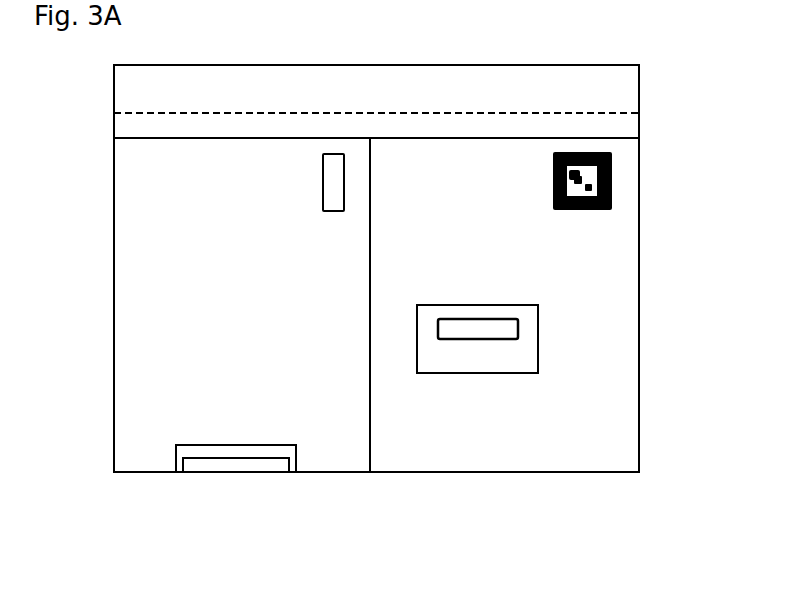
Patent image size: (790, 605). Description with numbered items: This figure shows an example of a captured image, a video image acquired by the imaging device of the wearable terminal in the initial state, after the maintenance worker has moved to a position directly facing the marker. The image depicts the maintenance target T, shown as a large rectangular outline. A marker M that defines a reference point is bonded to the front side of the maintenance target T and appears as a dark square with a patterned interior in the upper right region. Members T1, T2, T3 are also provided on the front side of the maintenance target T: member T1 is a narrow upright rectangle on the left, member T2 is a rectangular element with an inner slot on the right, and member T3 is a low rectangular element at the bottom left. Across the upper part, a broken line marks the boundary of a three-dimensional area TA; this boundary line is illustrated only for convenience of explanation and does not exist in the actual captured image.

The maintenance target T is at (620, 267).
The three-dimensional area TA is at (612, 113).
The member T1 is at (330, 178).
The member T2 is at (530, 345).
The member T3 is at (243, 452).
The marker M is at (612, 182).